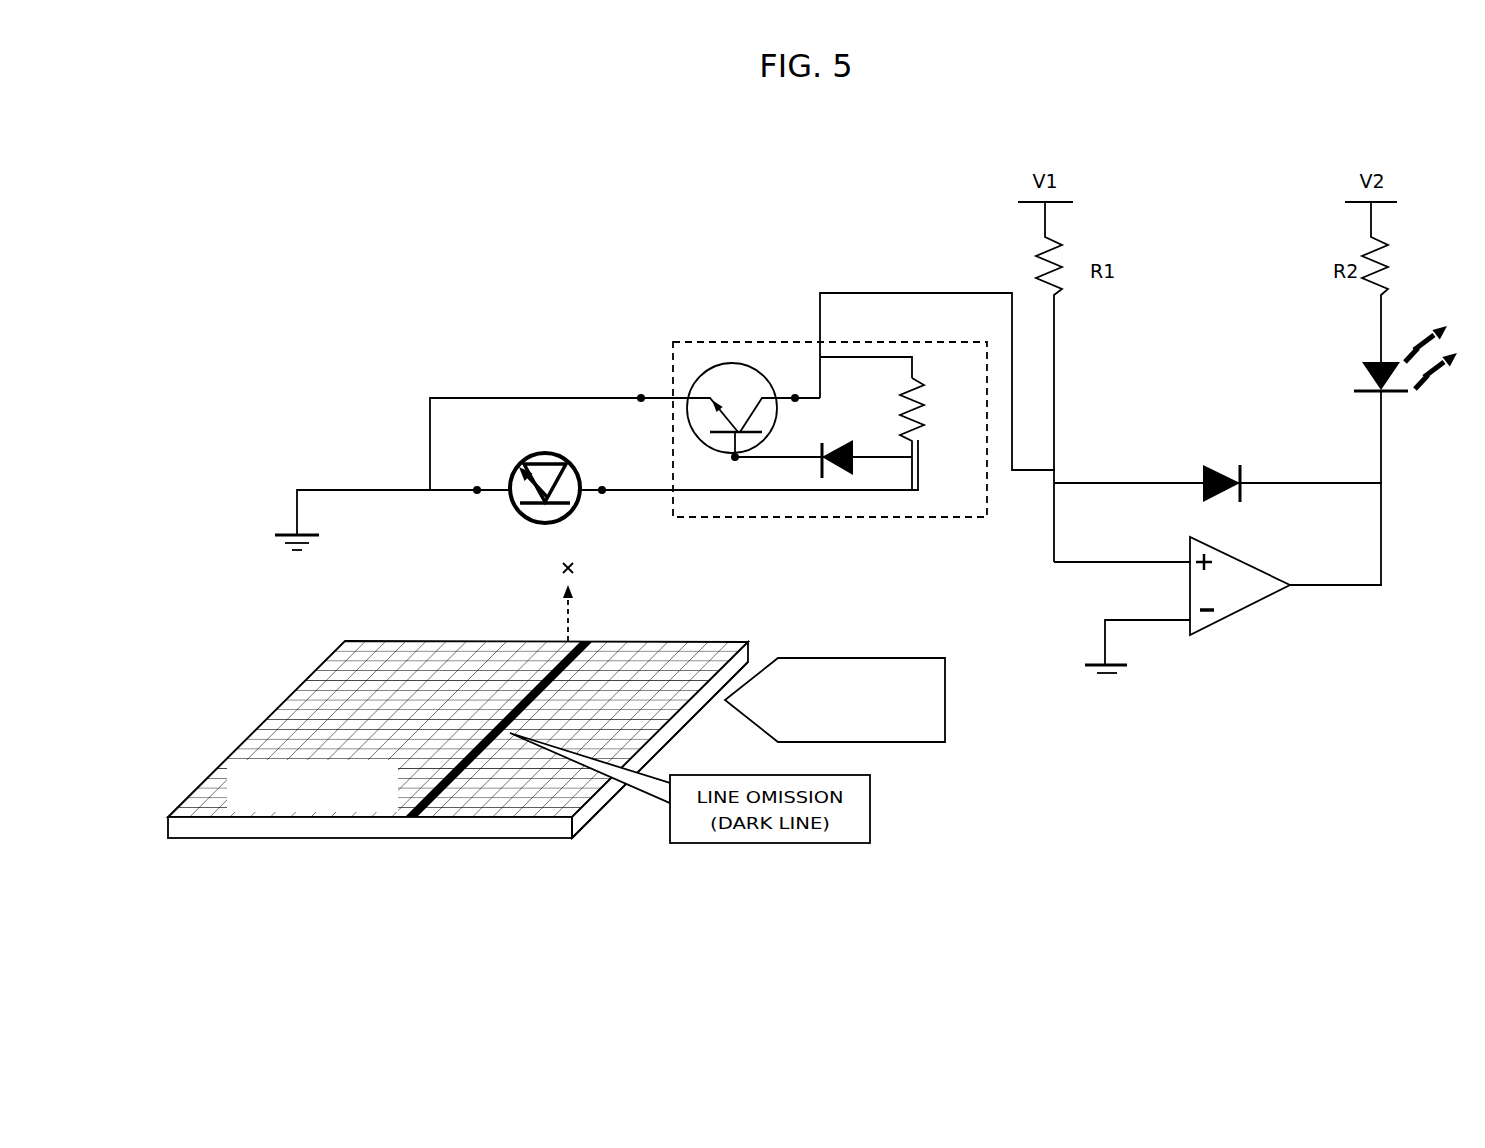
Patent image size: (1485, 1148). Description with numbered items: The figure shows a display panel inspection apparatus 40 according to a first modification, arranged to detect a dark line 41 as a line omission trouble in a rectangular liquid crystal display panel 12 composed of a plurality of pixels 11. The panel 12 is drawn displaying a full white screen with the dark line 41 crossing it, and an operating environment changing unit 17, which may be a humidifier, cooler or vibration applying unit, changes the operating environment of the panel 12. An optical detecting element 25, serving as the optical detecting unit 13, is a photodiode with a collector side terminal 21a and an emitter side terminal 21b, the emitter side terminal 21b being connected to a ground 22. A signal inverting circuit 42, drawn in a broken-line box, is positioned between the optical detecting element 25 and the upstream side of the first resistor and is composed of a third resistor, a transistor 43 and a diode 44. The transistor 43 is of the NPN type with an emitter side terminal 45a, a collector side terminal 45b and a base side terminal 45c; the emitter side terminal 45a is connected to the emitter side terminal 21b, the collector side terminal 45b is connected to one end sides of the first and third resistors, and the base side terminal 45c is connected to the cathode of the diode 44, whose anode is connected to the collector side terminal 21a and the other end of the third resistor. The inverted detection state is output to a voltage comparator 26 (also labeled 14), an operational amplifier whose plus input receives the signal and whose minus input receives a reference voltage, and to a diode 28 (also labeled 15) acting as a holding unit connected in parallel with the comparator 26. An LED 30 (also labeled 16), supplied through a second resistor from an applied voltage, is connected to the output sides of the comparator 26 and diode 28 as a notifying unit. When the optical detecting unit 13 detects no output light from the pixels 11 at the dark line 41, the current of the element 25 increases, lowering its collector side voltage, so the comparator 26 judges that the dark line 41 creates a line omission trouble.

The pixels 11 is at (205, 812).
The display panel 12 is at (580, 824).
The optical detecting unit 13 is at (573, 508).
The comparison unit 14 is at (1242, 612).
The diode 15 is at (1240, 464).
The light emitting element 16 is at (1364, 362).
The operating environment changing unit 17 is at (950, 703).
The collector side terminal 21a is at (603, 475).
The emitter side terminal 21b is at (473, 475).
The ground 22 is at (277, 540).
The optical detecting element 25 is at (613, 527).
The voltage comparator 26 is at (1218, 651).
The diode 28 is at (1218, 437).
The LED 30 is at (1322, 431).
The display panel inspection apparatus 40 is at (533, 280).
The dark line 41 is at (408, 817).
The signal inverting circuit 42 is at (826, 336).
The transistor 43 is at (699, 368).
The diode 44 is at (857, 473).
The emitter side terminal 45a is at (638, 387).
The collector side terminal 45b is at (792, 387).
The base side terminal 45c is at (733, 468).